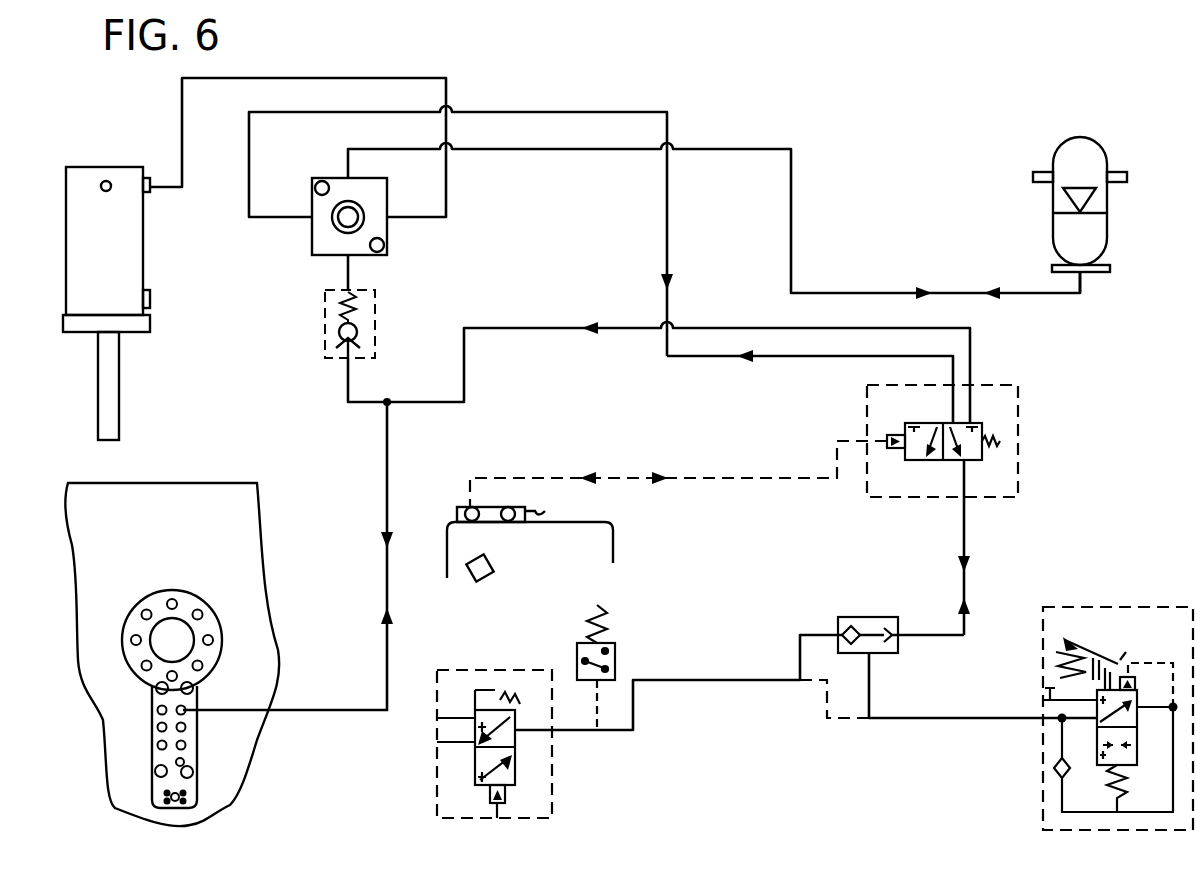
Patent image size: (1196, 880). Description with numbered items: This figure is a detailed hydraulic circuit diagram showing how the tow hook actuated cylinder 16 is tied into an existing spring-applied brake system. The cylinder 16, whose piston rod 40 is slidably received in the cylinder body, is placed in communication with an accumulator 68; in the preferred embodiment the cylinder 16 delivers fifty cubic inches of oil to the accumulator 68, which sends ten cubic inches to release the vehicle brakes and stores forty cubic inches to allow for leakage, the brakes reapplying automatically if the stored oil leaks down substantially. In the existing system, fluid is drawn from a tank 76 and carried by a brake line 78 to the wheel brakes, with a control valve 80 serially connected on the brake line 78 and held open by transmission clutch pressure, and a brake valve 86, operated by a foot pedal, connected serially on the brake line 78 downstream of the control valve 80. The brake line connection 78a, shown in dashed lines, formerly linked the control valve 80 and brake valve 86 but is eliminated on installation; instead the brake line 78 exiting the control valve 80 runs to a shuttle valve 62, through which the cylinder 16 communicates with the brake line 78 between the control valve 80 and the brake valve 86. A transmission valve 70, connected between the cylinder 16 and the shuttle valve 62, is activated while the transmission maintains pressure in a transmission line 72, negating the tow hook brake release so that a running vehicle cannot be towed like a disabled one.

The hydraulic cylinder 16 is at (89, 197).
The piston rod 40 is at (96, 407).
The shuttle valve 62 is at (858, 616).
The accumulator 68 is at (1052, 160).
The transmission valve 70 is at (872, 502).
The transmission line 72 is at (700, 489).
The tank 76 is at (262, 512).
The brake line 78 is at (713, 684).
The brake line connection 78a is at (843, 722).
The control valve 80 is at (554, 808).
The brake valve 86 is at (1054, 606).